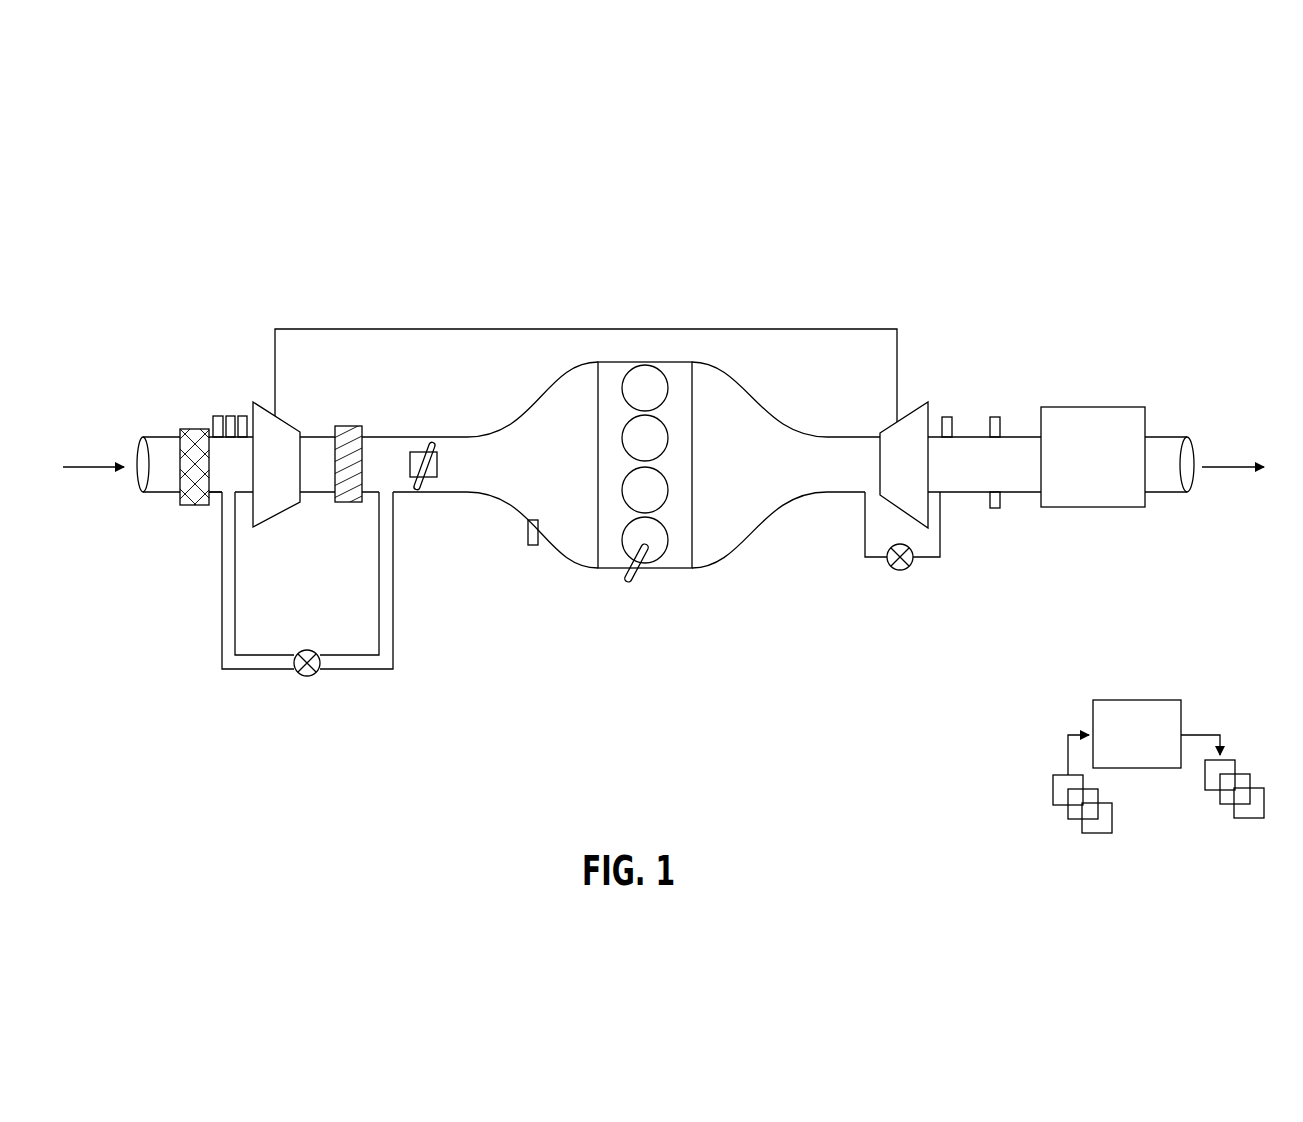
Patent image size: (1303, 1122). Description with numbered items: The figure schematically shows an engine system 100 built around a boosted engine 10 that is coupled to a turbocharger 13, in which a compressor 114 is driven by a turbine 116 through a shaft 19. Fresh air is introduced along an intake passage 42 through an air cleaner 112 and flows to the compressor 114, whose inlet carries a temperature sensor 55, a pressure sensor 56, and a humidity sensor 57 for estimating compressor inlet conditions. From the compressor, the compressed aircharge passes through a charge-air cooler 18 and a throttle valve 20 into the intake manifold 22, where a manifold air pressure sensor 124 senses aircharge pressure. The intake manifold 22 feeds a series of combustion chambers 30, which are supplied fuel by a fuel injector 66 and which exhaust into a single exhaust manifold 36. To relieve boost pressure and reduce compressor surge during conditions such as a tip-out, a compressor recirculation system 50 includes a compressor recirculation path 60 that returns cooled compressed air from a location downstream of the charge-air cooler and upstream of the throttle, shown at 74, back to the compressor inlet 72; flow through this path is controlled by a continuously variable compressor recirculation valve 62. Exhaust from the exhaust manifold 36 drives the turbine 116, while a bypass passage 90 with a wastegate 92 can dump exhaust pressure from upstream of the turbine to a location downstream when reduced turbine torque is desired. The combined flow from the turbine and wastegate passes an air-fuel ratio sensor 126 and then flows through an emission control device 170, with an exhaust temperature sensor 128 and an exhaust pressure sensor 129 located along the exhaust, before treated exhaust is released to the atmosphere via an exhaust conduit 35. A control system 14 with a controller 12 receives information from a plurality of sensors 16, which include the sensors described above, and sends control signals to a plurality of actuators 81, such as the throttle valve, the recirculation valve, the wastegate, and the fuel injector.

The engine system 100 is at (1201, 154).
The engine 10 is at (692, 447).
The controller 12 is at (1137, 734).
The turbocharger 13 is at (437, 306).
The control system 14 is at (1290, 690).
The sensors 16 is at (1120, 840).
The charge-air cooler 18 is at (352, 426).
The shaft 19 is at (799, 330).
The throttle valve 20 is at (438, 474).
The intake manifold 22 is at (558, 471).
The combustion chambers 30 is at (664, 382).
The exhaust conduit 35 is at (1168, 437).
The exhaust manifold 36 is at (768, 475).
The intake passage 42 is at (172, 492).
The compressor recirculation system 50 is at (324, 701).
The temperature sensor 55 is at (218, 416).
The pressure sensor 56 is at (231, 416).
The humidity sensor 57 is at (243, 416).
The compressor recirculation path 60 is at (379, 576).
The compressor recirculation valve 62 is at (308, 650).
The fuel injector 66 is at (642, 575).
The compressor inlet 72 is at (211, 505).
The location downstream of charge-air cooler and upstream of intake throttle 74 is at (398, 503).
The actuators 81 is at (1275, 824).
The bypass passage 90 is at (865, 545).
The wastegate 92 is at (893, 567).
The air cleaner 112 is at (196, 429).
The compressor 114 is at (291, 473).
The turbine 116 is at (918, 475).
The manifold air pressure sensor 124 is at (530, 522).
The air-fuel ratio sensor 126 is at (946, 417).
The exhaust temperature sensor 128 is at (995, 508).
The exhaust pressure sensor 129 is at (996, 417).
The emission control device 170 is at (1082, 407).